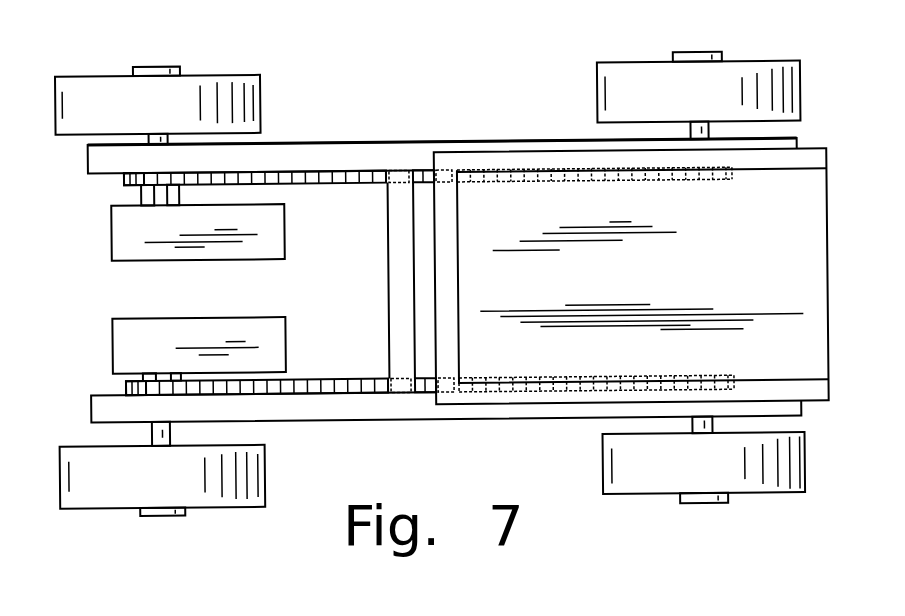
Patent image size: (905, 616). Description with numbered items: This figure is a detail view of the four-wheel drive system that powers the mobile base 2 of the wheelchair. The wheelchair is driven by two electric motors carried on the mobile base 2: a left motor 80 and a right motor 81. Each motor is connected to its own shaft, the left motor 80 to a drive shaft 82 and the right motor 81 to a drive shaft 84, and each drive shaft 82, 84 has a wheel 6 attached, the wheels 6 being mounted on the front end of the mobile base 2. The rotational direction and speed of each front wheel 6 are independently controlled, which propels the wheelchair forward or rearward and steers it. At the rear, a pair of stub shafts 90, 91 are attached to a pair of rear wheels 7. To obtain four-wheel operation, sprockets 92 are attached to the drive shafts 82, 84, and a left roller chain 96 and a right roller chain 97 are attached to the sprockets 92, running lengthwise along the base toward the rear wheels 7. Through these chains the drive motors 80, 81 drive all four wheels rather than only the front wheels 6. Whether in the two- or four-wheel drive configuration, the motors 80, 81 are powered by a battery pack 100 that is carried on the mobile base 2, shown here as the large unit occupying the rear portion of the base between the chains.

The mobile base 2 is at (478, 141).
The front wheels 6 is at (95, 87).
The rear wheels 7 is at (733, 73).
The left motor 80 is at (285, 333).
The right motor 81 is at (285, 221).
The drive shaft 82 is at (150, 436).
The drive shaft 84 is at (153, 144).
The stub shaft 90 is at (713, 422).
The stub shaft 91 is at (710, 131).
The sprockets 92 is at (125, 181).
The left roller chain 96 is at (311, 393).
The right roller chain 97 is at (321, 171).
The battery pack 100 is at (742, 278).